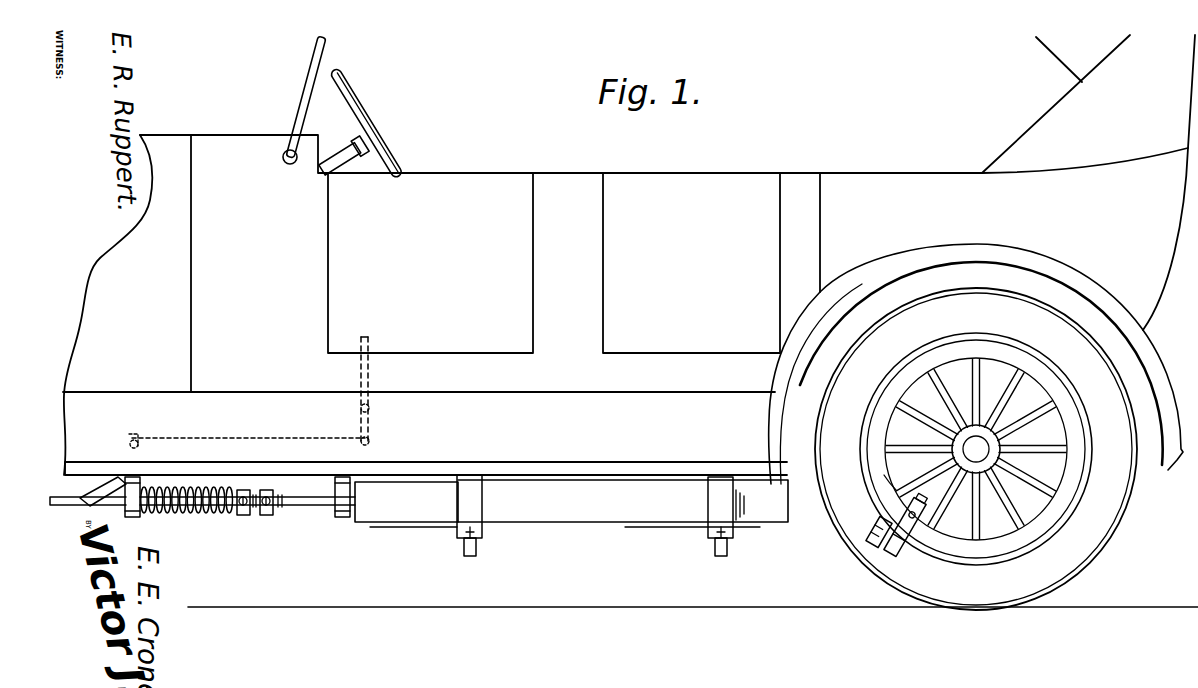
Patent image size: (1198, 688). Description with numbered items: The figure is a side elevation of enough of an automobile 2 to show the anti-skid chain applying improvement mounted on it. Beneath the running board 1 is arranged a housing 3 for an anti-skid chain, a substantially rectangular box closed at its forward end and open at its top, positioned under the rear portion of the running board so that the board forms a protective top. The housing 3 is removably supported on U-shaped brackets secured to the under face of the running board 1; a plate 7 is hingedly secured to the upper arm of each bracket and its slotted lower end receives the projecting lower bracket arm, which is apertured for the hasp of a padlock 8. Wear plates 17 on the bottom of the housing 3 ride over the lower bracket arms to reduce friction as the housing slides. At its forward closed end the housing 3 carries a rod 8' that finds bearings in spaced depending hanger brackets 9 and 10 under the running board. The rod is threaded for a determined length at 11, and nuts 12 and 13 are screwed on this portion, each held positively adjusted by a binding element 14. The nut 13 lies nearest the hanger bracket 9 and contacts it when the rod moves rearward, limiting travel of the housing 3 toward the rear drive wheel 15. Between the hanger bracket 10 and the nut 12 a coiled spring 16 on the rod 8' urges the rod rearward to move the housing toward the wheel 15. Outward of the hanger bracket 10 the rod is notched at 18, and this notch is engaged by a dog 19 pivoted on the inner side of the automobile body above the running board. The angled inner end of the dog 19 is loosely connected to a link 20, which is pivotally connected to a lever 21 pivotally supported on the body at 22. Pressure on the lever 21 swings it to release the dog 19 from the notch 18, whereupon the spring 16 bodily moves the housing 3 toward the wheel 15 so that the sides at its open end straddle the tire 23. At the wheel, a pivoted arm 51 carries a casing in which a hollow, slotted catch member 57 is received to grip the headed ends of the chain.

The running board 1 is at (612, 468).
The automobile 2 is at (565, 182).
The housing 3 is at (597, 516).
The plate 7 is at (722, 497).
The padlock 8 is at (613, 543).
The rod 8' is at (247, 536).
The hanger bracket 9 is at (343, 519).
The hanger bracket 10 is at (138, 514).
The threaded portion of the rod 11 is at (276, 512).
The nut 12 is at (470, 572).
The nut 13 is at (266, 514).
The binding element 14 is at (248, 489).
The rear or drive wheel 15 is at (880, 477).
The coiled spring 16 is at (197, 514).
The wear plate 17 is at (398, 526).
The notch 18 is at (88, 506).
The dog 19 is at (110, 470).
The link 20 is at (232, 437).
The lever 21 is at (370, 340).
The pivot 22 is at (372, 410).
The tire 23 is at (993, 590).
The arm 51 is at (905, 547).
The catch member 57 is at (866, 529).